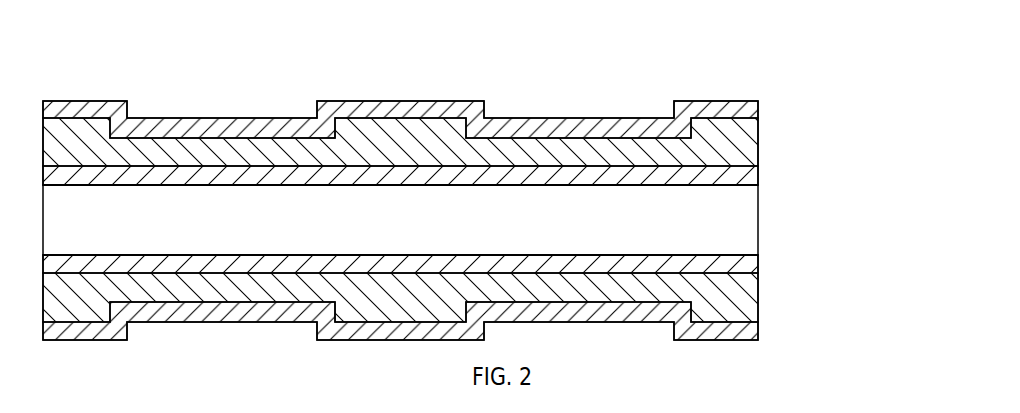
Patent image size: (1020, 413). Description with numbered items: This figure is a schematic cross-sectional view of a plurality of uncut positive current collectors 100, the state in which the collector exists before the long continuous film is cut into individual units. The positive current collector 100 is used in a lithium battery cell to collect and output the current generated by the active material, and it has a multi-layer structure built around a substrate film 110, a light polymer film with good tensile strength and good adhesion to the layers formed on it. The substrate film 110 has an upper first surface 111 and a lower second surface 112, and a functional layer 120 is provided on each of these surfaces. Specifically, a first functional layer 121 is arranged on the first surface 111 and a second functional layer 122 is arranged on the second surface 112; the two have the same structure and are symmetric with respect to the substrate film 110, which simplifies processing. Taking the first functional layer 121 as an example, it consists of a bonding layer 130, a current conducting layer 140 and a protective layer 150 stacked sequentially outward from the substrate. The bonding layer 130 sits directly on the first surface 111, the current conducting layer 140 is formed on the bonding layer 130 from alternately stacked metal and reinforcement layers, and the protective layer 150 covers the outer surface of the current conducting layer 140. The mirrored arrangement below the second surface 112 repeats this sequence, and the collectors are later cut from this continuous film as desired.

The positive current collector 100 is at (422, 55).
The substrate film 110 is at (745, 233).
The first surface 111 is at (485, 195).
The second surface 112 is at (507, 242).
The functional layer 120 is at (897, 105).
The first functional layer 121 is at (835, 67).
The second functional layer 122 is at (828, 238).
The bonding layer 130 is at (738, 175).
The current conducting layer 140 is at (725, 148).
The protective layer 150 is at (732, 110).